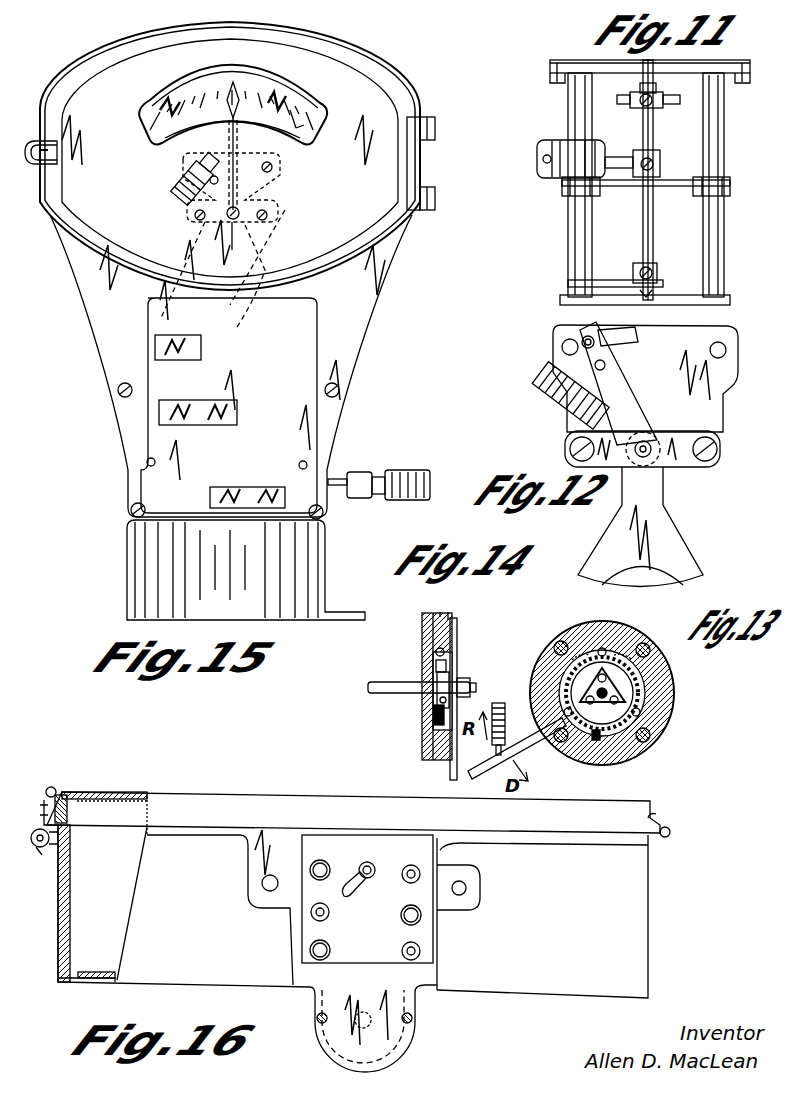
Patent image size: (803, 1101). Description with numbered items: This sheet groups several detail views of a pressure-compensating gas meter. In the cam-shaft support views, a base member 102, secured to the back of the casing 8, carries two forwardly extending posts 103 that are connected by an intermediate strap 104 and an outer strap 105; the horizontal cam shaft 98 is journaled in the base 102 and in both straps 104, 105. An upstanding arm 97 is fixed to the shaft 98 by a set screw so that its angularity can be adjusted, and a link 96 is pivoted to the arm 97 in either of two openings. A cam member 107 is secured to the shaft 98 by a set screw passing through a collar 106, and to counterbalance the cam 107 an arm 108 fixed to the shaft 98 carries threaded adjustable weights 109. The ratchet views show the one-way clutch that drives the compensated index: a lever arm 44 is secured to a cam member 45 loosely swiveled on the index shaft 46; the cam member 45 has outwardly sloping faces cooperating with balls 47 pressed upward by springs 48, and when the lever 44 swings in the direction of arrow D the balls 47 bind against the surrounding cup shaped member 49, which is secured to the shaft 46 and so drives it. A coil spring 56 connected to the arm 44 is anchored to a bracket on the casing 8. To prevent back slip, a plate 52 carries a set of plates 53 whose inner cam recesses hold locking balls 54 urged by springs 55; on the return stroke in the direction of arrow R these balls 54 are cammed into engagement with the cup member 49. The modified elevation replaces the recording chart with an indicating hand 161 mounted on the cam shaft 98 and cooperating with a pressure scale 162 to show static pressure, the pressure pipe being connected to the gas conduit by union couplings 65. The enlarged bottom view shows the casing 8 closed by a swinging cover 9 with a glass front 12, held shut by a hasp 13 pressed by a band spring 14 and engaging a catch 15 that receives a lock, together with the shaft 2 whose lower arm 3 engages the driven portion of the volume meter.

In FIG. 15, the indicating hand 161 is at (240, 108).
In FIG. 15, the pressure scale 162 is at (298, 117).
In FIG. 15, the horizontal shaft 98 is at (247, 202).
In FIG. 11, the horizontal shaft 98 is at (648, 238).
In FIG. 12, the horizontal shaft 98 is at (648, 441).
In FIG. 15, the union couplings 65 is at (356, 475).
In FIG. 11, the base member 102 is at (556, 66).
In FIG. 11, the posts 103 is at (568, 100).
In FIG. 11, the intermediate strap 104 is at (727, 190).
In FIG. 11, the outer strap 105 is at (730, 300).
In FIG. 12, the outer strap 105 is at (720, 445).
In FIG. 11, the collar 106 is at (633, 106).
In FIG. 11, the cam member 107 is at (675, 104).
In FIG. 12, the cam member 107 is at (665, 545).
In FIG. 11, the arm 108 is at (627, 170).
In FIG. 11, the adjustable weights 109 is at (565, 172).
In FIG. 12, the adjustable weights 109 is at (556, 398).
In FIG. 11, the upstanding arm 97 is at (595, 281).
In FIG. 12, the upstanding arm 97 is at (615, 392).
In FIG. 12, the link 96 is at (636, 336).
In FIG. 14, the plate 52 is at (432, 616).
In FIG. 14, the plates 53 is at (450, 621).
In FIG. 14, the balls 47 is at (446, 660).
In FIG. 13, the balls 47 is at (582, 652).
In FIG. 14, the cam member 45 is at (452, 668).
In FIG. 13, the cam member 45 is at (662, 717).
In FIG. 14, the index or counter shaft 46 is at (405, 680).
In FIG. 14, the intermediate cup shaped member 49 is at (437, 708).
In FIG. 13, the intermediate cup shaped member 49 is at (597, 740).
In FIG. 14, the lever arm 44 is at (452, 770).
In FIG. 14, the coil spring 56 is at (498, 703).
In FIG. 13, the locking balls 54 is at (605, 650).
In FIG. 13, the springs 48 is at (620, 693).
In FIG. 13, the springs 55 is at (646, 658).
In FIG. 16, the hasp 13 is at (45, 818).
In FIG. 16, the band spring 14 is at (53, 793).
In FIG. 16, the glass front 12 is at (102, 793).
In FIG. 16, the arm 3 is at (350, 882).
In FIG. 16, the shaft 2 is at (362, 866).
In FIG. 16, the swinging cover 9 is at (655, 819).
In FIG. 16, the catch 15 is at (39, 848).
In FIG. 16, the casing 8 is at (62, 907).